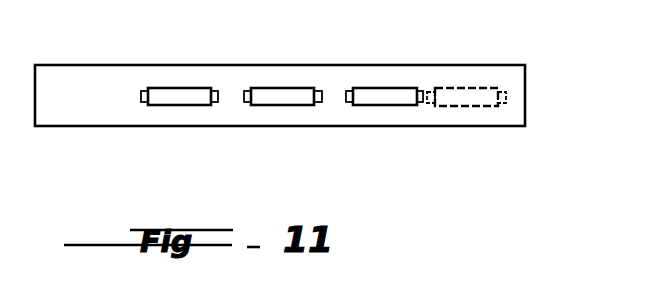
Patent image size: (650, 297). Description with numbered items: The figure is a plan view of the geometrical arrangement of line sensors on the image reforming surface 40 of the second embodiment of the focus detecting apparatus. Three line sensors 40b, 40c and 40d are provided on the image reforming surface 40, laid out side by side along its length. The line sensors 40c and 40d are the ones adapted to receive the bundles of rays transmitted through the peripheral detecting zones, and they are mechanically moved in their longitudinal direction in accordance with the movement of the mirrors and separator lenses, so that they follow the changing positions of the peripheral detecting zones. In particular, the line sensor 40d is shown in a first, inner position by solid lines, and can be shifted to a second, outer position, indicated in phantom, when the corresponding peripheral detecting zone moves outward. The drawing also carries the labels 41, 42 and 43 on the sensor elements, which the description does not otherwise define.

The image reforming surface 40 is at (465, 76).
The slot 41 is at (278, 105).
The slot 42 is at (175, 105).
The slot 43 is at (383, 105).
The line sensor 40b is at (320, 105).
The line sensor 40c is at (216, 105).
The line sensor 40d is at (420, 105).